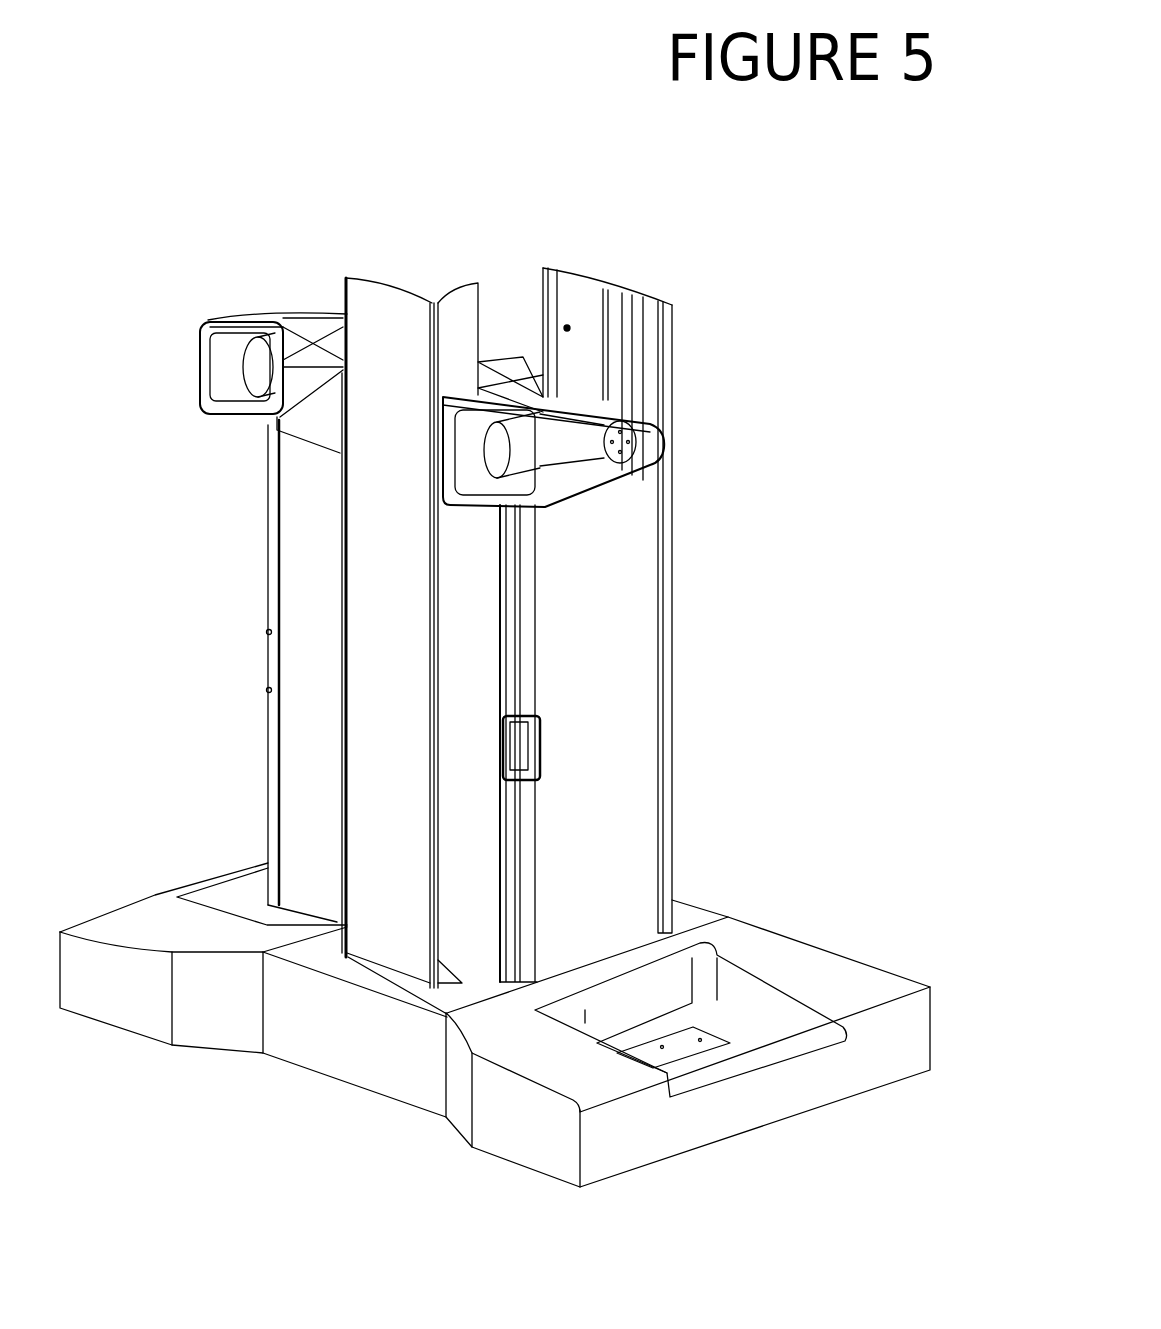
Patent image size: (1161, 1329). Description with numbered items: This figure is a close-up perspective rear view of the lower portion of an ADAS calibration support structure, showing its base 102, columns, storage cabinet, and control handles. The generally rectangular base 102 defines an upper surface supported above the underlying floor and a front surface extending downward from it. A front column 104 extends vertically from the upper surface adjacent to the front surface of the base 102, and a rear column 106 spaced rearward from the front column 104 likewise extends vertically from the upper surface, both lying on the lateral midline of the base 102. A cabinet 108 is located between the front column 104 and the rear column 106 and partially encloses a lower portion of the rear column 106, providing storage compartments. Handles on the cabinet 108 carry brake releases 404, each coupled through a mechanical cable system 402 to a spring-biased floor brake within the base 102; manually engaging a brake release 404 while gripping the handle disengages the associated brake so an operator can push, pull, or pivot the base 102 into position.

The base 102 is at (787, 927).
The front column 104 is at (583, 303).
The rear column 106 is at (385, 352).
The cabinet 108 is at (607, 675).
The mechanical cable system 402 is at (277, 357).
The brake release 404 is at (247, 380).